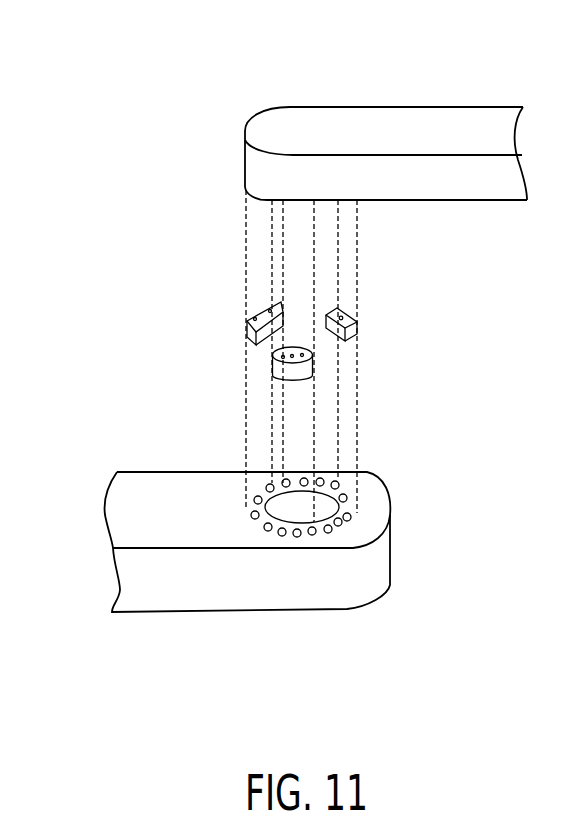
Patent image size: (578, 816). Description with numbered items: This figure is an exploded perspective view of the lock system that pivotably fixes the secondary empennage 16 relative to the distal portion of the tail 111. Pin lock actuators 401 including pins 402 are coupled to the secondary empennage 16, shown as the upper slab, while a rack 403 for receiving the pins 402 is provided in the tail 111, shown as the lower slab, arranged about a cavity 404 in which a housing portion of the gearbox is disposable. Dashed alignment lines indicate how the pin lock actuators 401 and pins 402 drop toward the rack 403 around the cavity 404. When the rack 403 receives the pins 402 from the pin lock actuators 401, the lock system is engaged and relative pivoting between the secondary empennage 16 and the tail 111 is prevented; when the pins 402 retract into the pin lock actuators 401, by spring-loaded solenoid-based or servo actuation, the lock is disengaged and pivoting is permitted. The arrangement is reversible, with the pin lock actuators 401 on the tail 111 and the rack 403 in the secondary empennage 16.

The secondary empennage 16 is at (472, 82).
The distal portion of the tail 111 is at (150, 460).
The pin lock actuators 401 is at (357, 323).
The pins 402 is at (338, 310).
The rack 403 is at (342, 481).
The cavity 404 is at (313, 524).